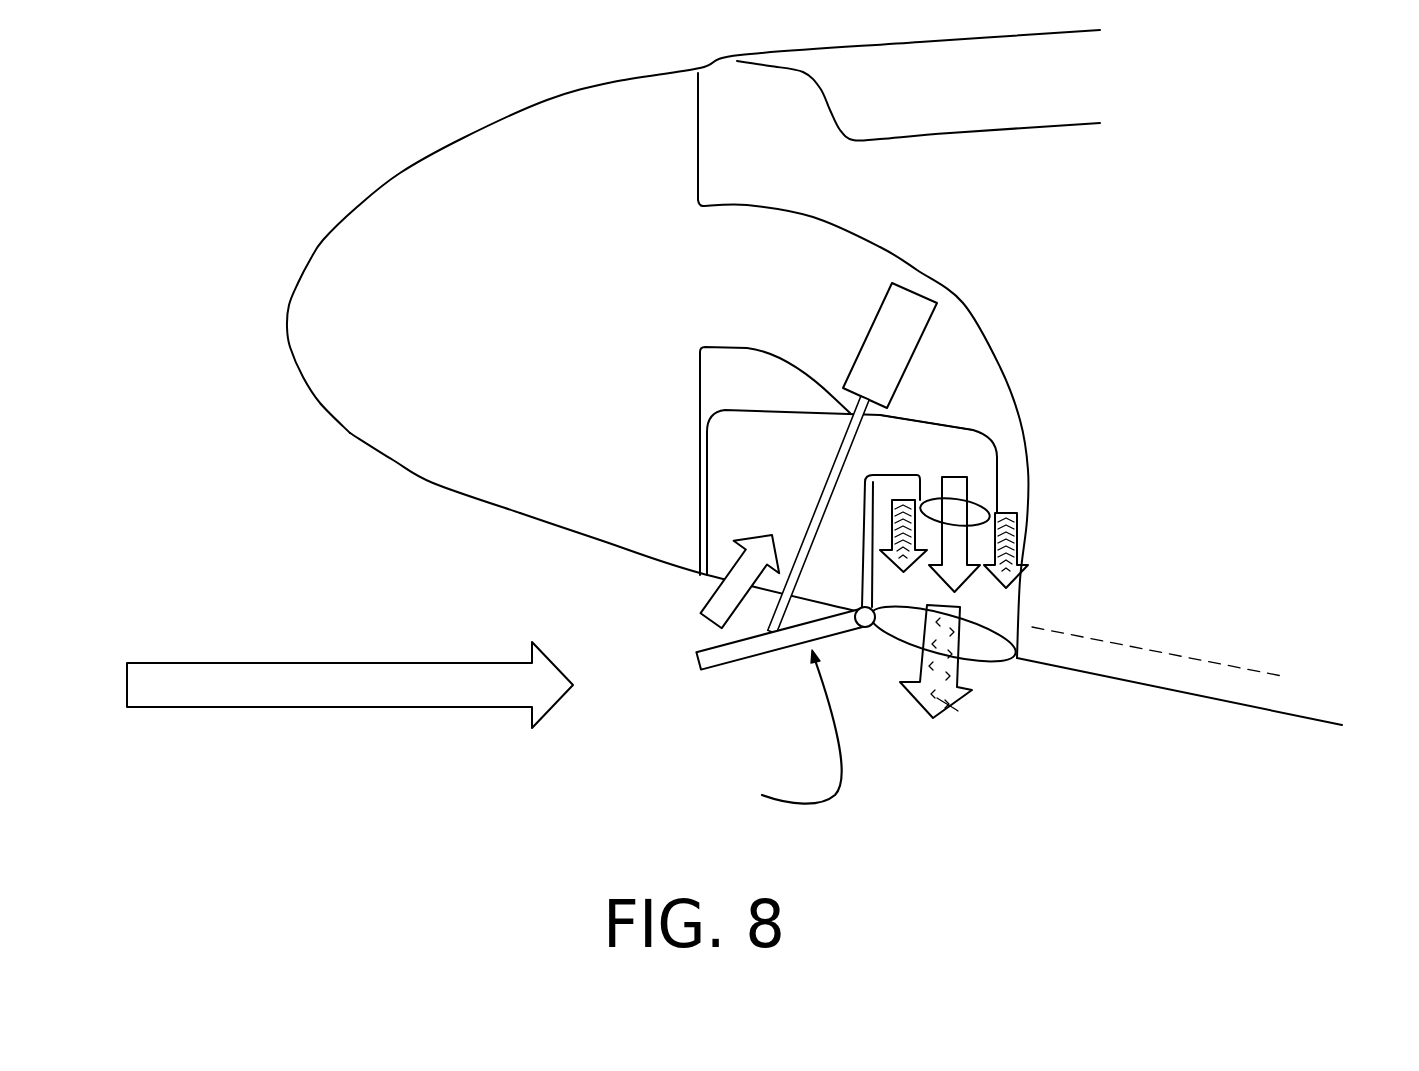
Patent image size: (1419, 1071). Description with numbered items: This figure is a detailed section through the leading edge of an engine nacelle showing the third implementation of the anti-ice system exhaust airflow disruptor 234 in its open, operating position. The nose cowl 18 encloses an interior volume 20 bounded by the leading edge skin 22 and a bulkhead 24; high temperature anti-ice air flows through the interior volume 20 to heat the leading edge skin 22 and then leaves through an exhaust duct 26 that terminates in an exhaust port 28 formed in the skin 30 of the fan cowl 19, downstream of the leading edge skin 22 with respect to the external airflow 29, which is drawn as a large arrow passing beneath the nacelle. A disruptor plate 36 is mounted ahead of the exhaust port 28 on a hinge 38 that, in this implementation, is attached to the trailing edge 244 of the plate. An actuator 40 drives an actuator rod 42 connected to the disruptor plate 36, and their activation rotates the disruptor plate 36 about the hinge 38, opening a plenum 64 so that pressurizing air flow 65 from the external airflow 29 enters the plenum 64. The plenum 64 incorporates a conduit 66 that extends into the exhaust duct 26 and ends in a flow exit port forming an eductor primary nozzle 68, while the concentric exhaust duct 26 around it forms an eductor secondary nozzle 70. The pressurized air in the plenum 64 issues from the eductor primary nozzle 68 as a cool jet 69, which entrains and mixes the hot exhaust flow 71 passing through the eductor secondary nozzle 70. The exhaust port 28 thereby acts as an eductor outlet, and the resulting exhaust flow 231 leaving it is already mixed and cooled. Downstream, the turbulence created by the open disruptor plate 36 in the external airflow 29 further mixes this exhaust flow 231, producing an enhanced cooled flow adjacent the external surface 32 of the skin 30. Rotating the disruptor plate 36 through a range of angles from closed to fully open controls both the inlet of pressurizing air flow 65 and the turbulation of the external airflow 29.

The nose cowl 18 is at (528, 530).
The fan cowl 19 is at (1337, 734).
The interior volume 20 is at (400, 353).
The leading edge skin 22 is at (413, 473).
The bulkhead 24 is at (697, 417).
The exhaust duct 26 is at (947, 363).
The exhaust port 28 is at (980, 648).
The external airflow 29 is at (403, 710).
The skin 30 is at (1113, 663).
The external surface 32 is at (1183, 697).
The disruptor plate 36 is at (770, 655).
The hinge 38 is at (872, 627).
The actuator 40 is at (927, 330).
The actuator rod 42 is at (837, 447).
The plenum 64 is at (740, 507).
The pressurizing air flow 65 is at (737, 580).
The conduit 66 is at (897, 440).
The eductor primary nozzle 68 is at (1002, 491).
The cool jet 69 is at (960, 492).
The eductor secondary nozzle 70 is at (1030, 579).
The exhaust flow 71 is at (1013, 540).
The exhaust flow 231 is at (958, 711).
The anti-ice system exhaust airflow disruptor 234 is at (762, 795).
The trailing edge 244 is at (853, 627).